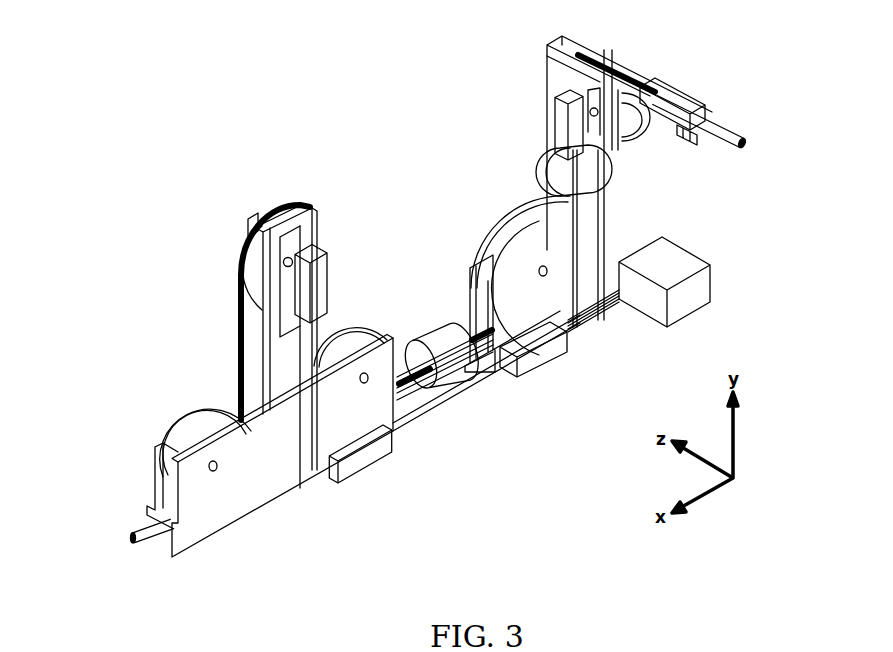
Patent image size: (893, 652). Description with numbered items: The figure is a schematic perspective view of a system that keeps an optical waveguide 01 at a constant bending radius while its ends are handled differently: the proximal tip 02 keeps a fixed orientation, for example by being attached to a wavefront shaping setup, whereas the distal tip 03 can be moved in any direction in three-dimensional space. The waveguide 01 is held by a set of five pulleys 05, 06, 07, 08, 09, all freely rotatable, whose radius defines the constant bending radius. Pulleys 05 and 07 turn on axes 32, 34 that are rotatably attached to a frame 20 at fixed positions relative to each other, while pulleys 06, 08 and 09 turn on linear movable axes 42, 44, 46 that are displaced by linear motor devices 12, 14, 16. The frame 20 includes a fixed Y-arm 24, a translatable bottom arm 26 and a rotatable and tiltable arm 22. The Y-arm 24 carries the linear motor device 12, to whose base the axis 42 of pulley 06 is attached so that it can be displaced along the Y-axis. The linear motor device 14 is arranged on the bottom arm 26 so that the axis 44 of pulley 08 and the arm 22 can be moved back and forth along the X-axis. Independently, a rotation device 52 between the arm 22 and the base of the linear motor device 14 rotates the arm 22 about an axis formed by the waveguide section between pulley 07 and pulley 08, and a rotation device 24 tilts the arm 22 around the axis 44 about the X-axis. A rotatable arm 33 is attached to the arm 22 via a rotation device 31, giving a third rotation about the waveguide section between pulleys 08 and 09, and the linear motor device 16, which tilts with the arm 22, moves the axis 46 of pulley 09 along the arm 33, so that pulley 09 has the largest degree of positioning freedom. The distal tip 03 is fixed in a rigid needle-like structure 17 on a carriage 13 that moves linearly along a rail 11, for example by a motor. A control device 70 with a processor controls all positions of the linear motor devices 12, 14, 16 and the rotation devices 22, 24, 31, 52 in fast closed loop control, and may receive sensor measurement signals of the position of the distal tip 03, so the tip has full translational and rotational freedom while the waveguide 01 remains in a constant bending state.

The optical waveguide 01 is at (237, 350).
The proximal tip 02 is at (130, 538).
The distal tip 03 is at (748, 142).
The pulley 05 is at (197, 418).
The pulley 06 is at (257, 267).
The pulley 07 is at (353, 343).
The pulley 08 is at (516, 232).
The pulley 09 is at (627, 145).
The rail 11 is at (700, 147).
The linear motor device 12 is at (322, 293).
The carriage 13 is at (688, 98).
The linear motor device 14 is at (367, 465).
The linear motor device 16 is at (562, 118).
The rigid needle-like structure 17 is at (723, 128).
The frame 20 is at (275, 483).
The rotatable and tiltable arm 22 is at (512, 315).
The Y-arm / rotation device 24 is at (253, 220).
The bottom arm 26 is at (425, 398).
The rotation device 31 is at (545, 168).
The axis 32 is at (218, 471).
The rotatable arm 33 is at (546, 56).
The axis 34 is at (368, 384).
The linear movable axis 42 is at (297, 258).
The linear movable axis 44 is at (539, 268).
The linear movable axis 46 is at (590, 108).
The rotation device 52 is at (443, 337).
The control device 70 is at (705, 282).